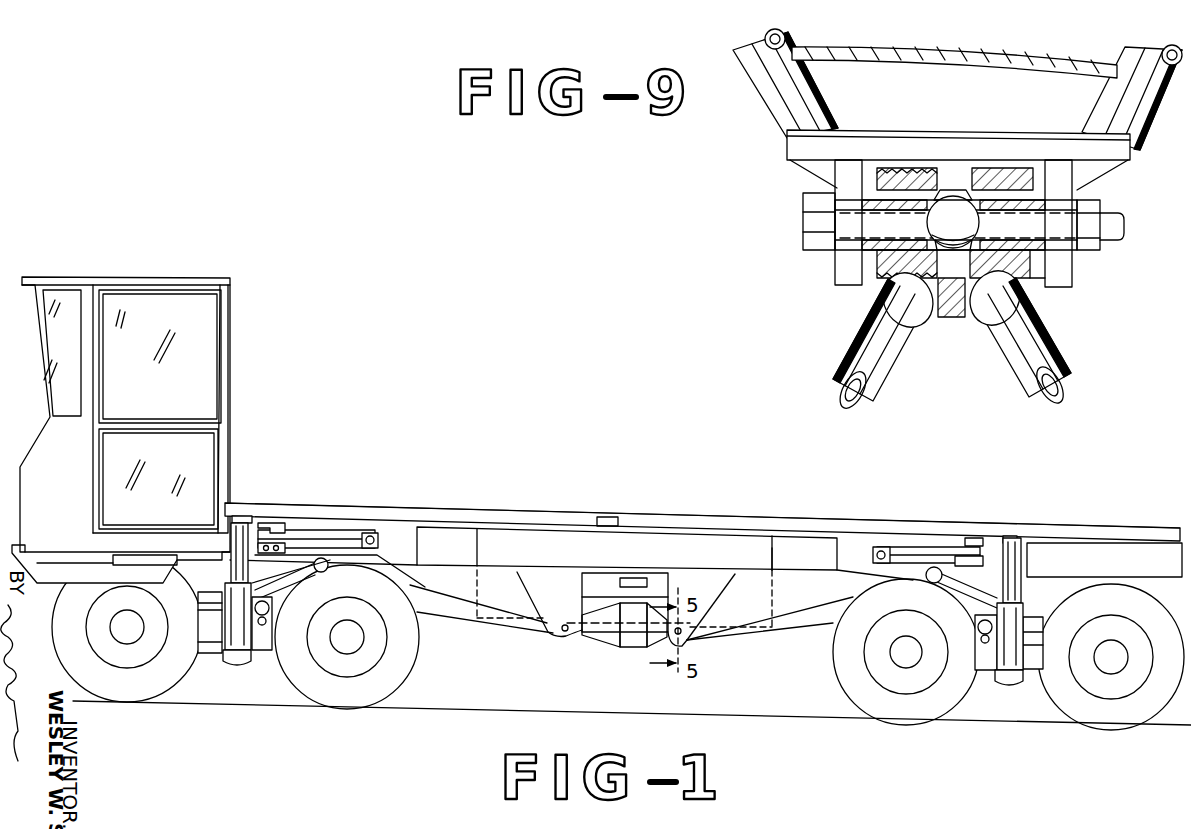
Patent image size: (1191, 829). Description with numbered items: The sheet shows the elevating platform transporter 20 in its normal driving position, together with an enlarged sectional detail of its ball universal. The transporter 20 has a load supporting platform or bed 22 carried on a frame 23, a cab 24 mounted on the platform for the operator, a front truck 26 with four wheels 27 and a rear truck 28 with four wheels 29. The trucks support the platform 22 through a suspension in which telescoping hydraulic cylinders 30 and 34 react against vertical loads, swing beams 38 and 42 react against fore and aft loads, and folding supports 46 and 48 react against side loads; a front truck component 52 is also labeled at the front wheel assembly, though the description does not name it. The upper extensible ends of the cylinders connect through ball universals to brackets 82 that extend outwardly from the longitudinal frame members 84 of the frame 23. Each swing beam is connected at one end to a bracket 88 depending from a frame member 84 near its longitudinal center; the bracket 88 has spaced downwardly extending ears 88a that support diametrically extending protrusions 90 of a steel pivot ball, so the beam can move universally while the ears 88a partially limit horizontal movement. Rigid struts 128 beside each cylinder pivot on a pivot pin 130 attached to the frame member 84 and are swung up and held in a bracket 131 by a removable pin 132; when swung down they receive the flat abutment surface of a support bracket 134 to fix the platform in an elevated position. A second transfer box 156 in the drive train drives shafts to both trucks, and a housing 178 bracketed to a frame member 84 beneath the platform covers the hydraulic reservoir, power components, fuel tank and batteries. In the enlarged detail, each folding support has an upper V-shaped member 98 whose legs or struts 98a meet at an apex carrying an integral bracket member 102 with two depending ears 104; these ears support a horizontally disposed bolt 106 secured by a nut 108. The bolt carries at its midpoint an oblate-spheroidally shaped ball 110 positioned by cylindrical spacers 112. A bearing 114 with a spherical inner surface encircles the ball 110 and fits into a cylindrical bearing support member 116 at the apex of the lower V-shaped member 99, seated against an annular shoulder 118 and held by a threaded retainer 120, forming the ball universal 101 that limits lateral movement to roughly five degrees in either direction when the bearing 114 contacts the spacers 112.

In FIG. 1, the elevating platform transporter 20 is at (493, 388).
In FIG. 1, the load supporting platform or bed 22 is at (468, 508).
In FIG. 1, the frame 23 is at (515, 529).
In FIG. 1, the cab 24 is at (70, 501).
In FIG. 1, the front truck 26 is at (266, 661).
In FIG. 1, the wheels 27 is at (142, 698).
In FIG. 1, the rear truck 28 is at (1031, 688).
In FIG. 1, the wheels 29 is at (845, 681).
In FIG. 1, the telescoping hydraulic cylinder 30 is at (255, 645).
In FIG. 1, the telescoping hydraulic cylinder 34 is at (1030, 633).
In FIG. 1, the swing beam 38 is at (450, 612).
In FIG. 1, the swing beam 42 is at (815, 624).
In FIG. 1, the folding support 46 is at (278, 578).
In FIG. 1, the folding support 48 is at (979, 601).
In FIG. 1, the front axle hub 52 is at (213, 636).
In FIG. 1, the bracket 82 is at (243, 517).
In FIG. 1, the longitudinal frame member 84 is at (560, 556).
In FIG. 1, the bracket 88 is at (570, 594).
In FIG. 1, the downwardly extending ears 88a is at (550, 634).
In FIG. 1, the protrusions 90 is at (565, 632).
In FIG. 1, the rigid strut 128 is at (312, 538).
In FIG. 1, the pivot pin 130 is at (263, 547).
In FIG. 1, the bracket 131 is at (370, 551).
In FIG. 1, the removable pin 132 is at (368, 538).
In FIG. 1, the support bracket 134 is at (290, 575).
In FIG. 1, the second transfer box 156 is at (623, 648).
In FIG. 1, the housing 178 is at (802, 532).
In FIG. 9, the upper V-shaped member 98 is at (733, 50).
In FIG. 9, the legs or struts 98a is at (1115, 62).
In FIG. 9, the lower V-shaped member 99 is at (850, 328).
In FIG. 9, the ball universal 101 is at (803, 214).
In FIG. 9, the bracket member 102 is at (795, 148).
In FIG. 9, the depending ears 104 is at (840, 280).
In FIG. 9, the bolt 106 is at (1124, 233).
In FIG. 9, the nut 108 is at (1097, 209).
In FIG. 9, the ball 110 is at (972, 205).
In FIG. 9, the cylindrical spacers 112 is at (870, 193).
In FIG. 9, the bearing 114 is at (952, 190).
In FIG. 9, the bearing support member 116 is at (1030, 283).
In FIG. 9, the annular shoulder 118 is at (935, 278).
In FIG. 9, the threaded retainer 120 is at (880, 256).